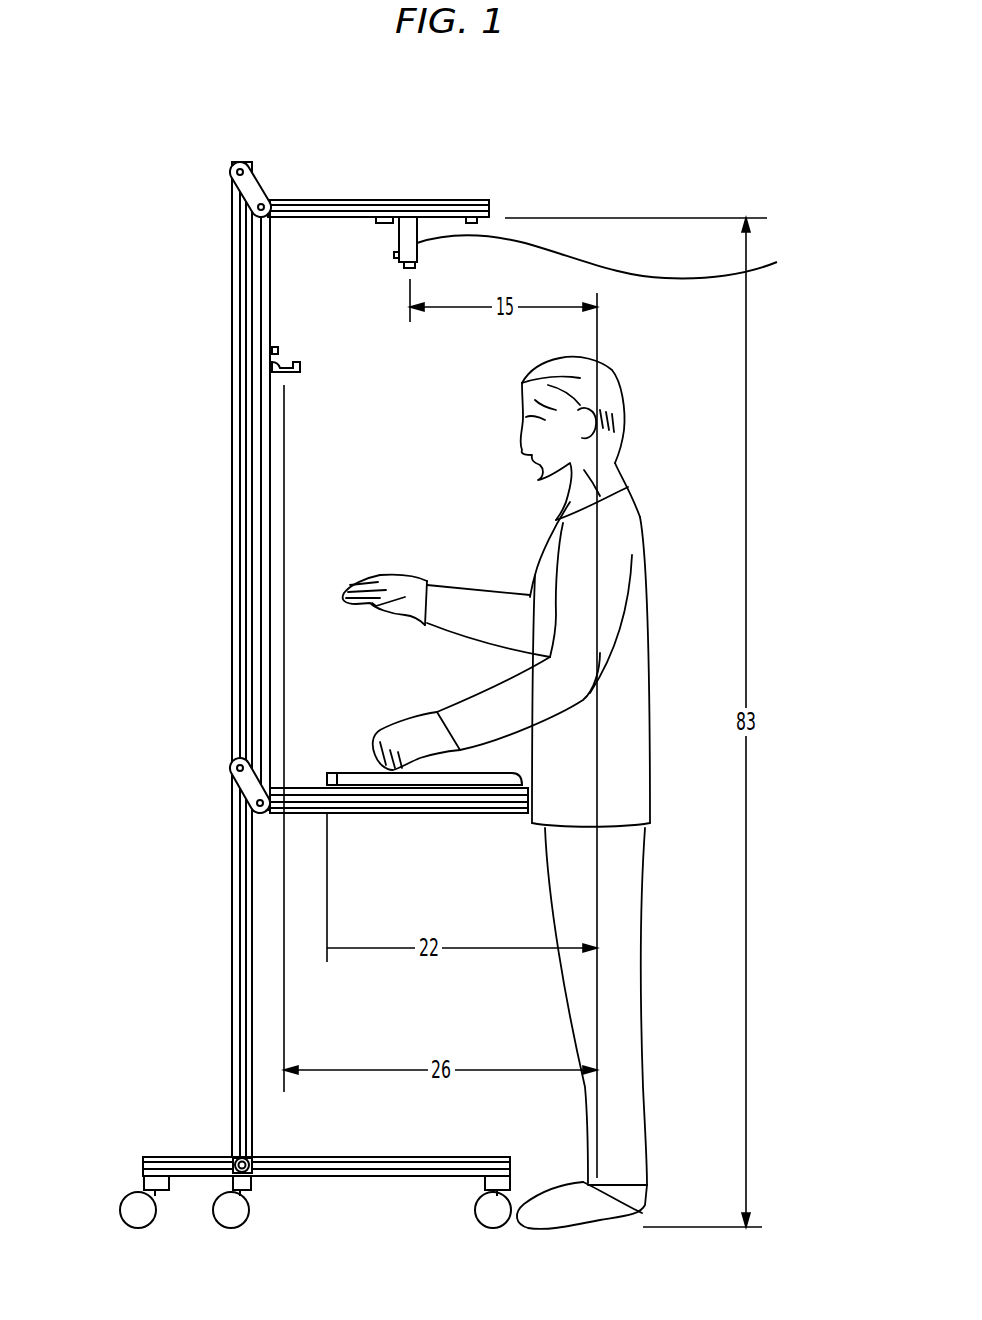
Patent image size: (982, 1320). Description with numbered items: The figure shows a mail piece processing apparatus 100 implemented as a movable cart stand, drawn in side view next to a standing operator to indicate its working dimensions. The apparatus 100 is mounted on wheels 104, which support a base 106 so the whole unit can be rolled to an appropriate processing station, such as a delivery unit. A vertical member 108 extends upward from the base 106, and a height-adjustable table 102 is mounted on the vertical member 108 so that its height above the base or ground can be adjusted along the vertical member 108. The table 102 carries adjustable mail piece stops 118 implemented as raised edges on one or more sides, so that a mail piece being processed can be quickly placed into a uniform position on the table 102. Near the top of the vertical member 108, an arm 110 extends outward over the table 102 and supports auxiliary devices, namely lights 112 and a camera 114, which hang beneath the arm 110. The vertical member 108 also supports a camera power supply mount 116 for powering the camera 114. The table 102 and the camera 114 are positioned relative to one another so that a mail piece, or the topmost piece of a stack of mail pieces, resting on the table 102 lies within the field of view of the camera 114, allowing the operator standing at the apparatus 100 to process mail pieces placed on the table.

The mail piece processing apparatus 100 is at (140, 75).
The height-adjustable table 102 is at (303, 813).
The wheels 104 is at (120, 1203).
The base 106 is at (203, 1156).
The vertical member 108 is at (232, 738).
The arm 110 is at (318, 199).
The lights 112 is at (476, 217).
The camera 114 is at (618, 256).
The camera power supply mount 116 is at (283, 366).
The adjustable mail piece stops 118 is at (323, 770).